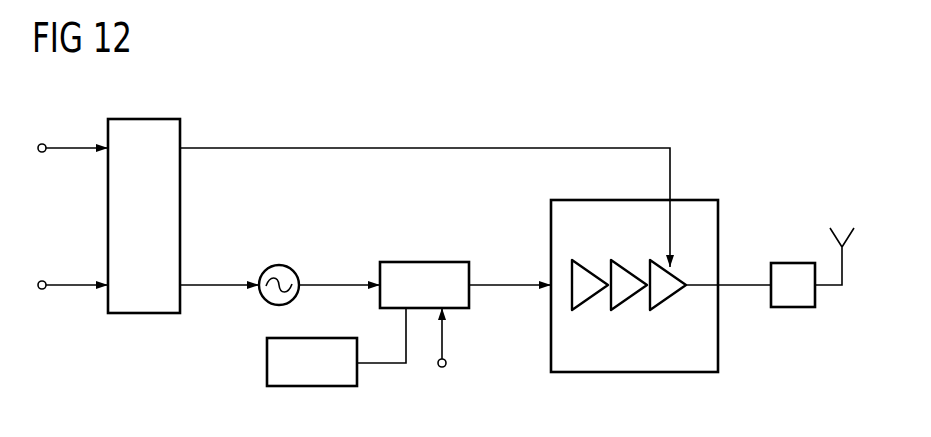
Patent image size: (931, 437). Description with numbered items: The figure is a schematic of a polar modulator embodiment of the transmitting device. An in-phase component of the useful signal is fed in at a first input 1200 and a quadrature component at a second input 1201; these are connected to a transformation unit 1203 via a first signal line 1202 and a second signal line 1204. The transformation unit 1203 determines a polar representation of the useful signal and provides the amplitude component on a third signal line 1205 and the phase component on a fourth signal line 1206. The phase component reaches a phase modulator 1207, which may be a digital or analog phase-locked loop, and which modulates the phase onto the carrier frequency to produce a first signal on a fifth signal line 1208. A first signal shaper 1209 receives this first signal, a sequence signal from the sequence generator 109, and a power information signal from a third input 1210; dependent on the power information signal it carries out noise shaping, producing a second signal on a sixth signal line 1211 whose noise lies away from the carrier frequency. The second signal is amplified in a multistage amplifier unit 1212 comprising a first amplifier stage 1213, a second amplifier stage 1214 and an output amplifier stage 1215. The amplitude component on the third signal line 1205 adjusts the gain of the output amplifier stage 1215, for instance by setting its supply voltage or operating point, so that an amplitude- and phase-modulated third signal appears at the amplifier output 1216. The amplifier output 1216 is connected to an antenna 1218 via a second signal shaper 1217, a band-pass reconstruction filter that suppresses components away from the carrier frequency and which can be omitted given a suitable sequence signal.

The sequence generator 109 is at (266, 362).
The first input 1200 is at (42, 153).
The second input 1201 is at (42, 290).
The first signal line 1202 is at (68, 146).
The transformation unit 1203 is at (145, 118).
The second signal line 1204 is at (68, 283).
The third signal line 1205 is at (433, 147).
The fourth signal line 1206 is at (214, 283).
The phase modulator 1207 is at (279, 264).
The fifth signal line 1208 is at (332, 283).
The first signal shaper 1209 is at (426, 261).
The third input 1210 is at (447, 362).
The sixth signal line 1211 is at (502, 283).
The multistage amplifier unit 1212 is at (635, 373).
The first amplifier stage 1213 is at (596, 299).
The second amplifier stage 1214 is at (632, 266).
The output amplifier stage 1215 is at (672, 301).
The amplifier output 1216 is at (722, 288).
The second signal shaper 1217 is at (793, 308).
The antenna 1218 is at (835, 238).